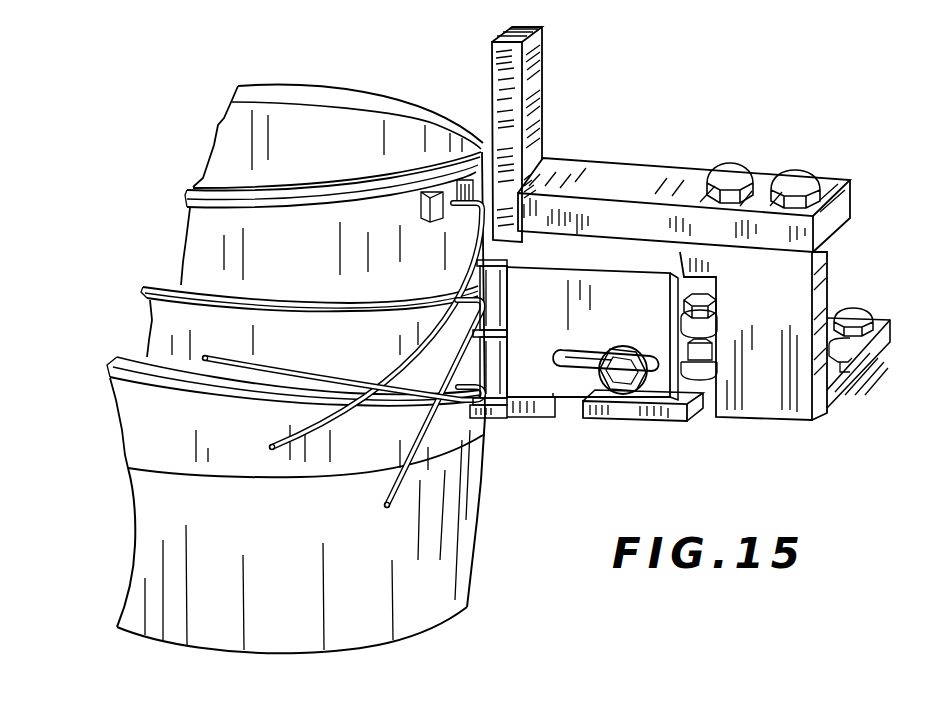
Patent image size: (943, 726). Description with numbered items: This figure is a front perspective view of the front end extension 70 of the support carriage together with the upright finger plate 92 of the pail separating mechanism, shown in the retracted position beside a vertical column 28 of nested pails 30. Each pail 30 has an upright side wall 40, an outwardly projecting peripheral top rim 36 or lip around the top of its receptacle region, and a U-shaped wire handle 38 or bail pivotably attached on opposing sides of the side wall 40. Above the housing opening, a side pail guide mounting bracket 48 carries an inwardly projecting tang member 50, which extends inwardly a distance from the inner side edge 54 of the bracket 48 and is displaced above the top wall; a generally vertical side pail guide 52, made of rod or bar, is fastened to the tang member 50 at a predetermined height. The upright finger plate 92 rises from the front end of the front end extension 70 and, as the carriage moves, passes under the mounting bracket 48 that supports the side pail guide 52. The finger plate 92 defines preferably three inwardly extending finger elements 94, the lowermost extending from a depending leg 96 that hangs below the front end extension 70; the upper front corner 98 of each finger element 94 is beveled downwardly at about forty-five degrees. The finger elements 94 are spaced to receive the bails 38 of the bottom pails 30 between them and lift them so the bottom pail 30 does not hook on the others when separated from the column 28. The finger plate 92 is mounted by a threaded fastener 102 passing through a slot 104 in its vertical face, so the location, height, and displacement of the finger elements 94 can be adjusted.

The column 28 is at (423, 568).
The pail 30 is at (333, 88).
The peripheral top rim 36 is at (192, 192).
The wire handle 38 is at (470, 236).
The upright side wall 40 is at (318, 256).
The side pail guide mounting bracket 48 is at (806, 289).
The tang member 50 is at (654, 177).
The side pail guide 52 is at (533, 66).
The inner side edge 54 is at (710, 285).
The front end extension 70 is at (672, 422).
The upright finger plate 92 is at (660, 312).
The finger element 94 is at (502, 280).
The depending leg 96 is at (543, 416).
The upper front corner 98 is at (507, 263).
The threaded fastener 102 is at (610, 383).
The slot 104 is at (585, 352).